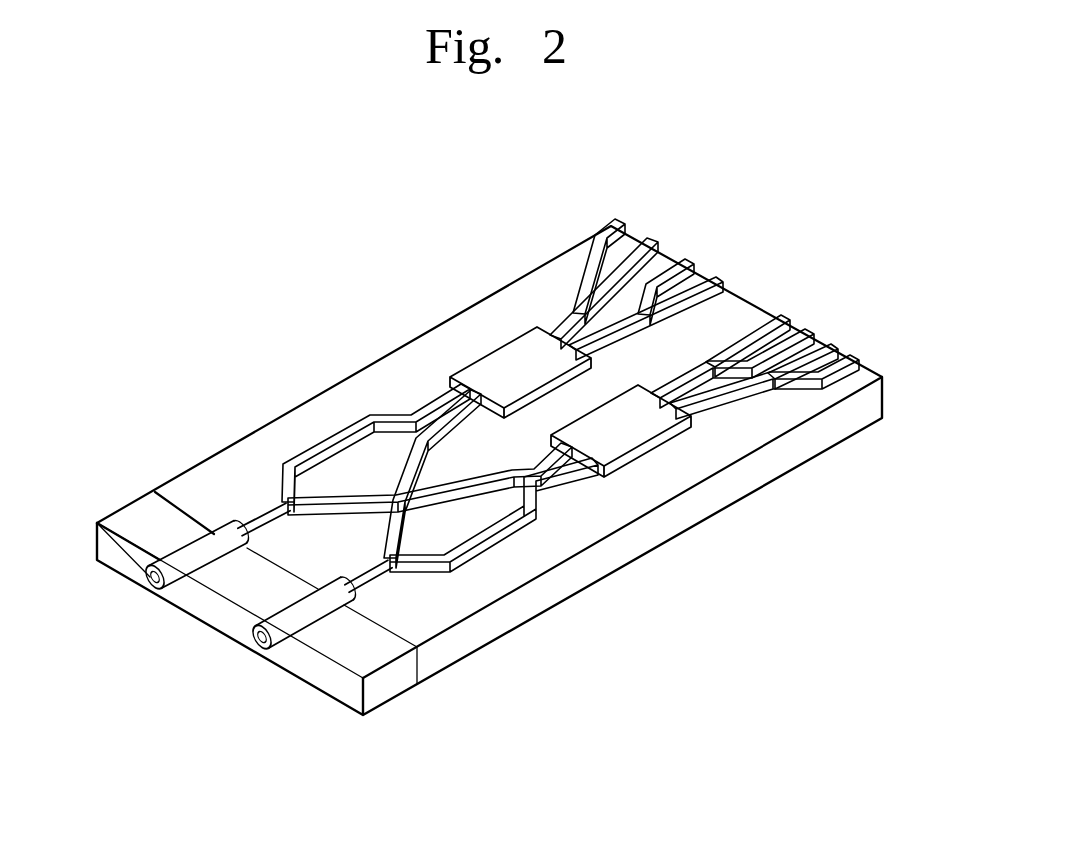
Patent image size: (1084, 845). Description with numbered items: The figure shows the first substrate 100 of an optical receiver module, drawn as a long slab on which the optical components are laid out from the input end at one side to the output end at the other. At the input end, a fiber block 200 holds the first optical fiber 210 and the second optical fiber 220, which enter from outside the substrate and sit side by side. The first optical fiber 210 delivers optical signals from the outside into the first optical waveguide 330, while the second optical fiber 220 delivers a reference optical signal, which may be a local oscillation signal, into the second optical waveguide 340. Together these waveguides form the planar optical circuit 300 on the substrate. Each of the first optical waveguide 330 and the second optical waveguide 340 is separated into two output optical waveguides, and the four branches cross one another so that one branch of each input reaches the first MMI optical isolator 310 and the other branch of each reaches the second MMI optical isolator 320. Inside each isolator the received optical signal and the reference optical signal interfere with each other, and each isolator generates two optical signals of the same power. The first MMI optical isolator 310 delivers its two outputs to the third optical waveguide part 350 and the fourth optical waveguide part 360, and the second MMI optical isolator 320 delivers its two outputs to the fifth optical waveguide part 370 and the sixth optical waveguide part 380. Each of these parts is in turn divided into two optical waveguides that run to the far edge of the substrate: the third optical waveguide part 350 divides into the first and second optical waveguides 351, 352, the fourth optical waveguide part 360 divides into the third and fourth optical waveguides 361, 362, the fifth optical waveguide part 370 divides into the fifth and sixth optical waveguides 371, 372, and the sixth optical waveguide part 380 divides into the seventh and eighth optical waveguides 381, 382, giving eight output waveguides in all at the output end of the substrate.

The first substrate 100 is at (565, 588).
The optical fiber block 200 is at (137, 520).
The first optical fiber 210 is at (205, 540).
The second optical fiber 220 is at (307, 615).
The planar lightwave circuit 300 is at (377, 382).
The first MMI optical isolator 310 is at (504, 358).
The second MMI optical isolator 320 is at (645, 456).
The first optical waveguide 330 is at (278, 502).
The second optical waveguide 340 is at (358, 582).
The third optical waveguide part 350 is at (601, 247).
The first optical waveguide 351 is at (612, 245).
The second optical waveguide 352 is at (636, 262).
The fourth optical waveguide part 360 is at (652, 266).
The third optical waveguide 361 is at (674, 272).
The fourth optical waveguide 362 is at (702, 290).
The fifth optical waveguide part 370 is at (764, 371).
The fifth optical waveguide 371 is at (760, 336).
The sixth optical waveguide 372 is at (788, 348).
The sixth optical waveguide part 380 is at (794, 370).
The seventh optical waveguide 381 is at (816, 360).
The eighth optical waveguide 382 is at (841, 369).